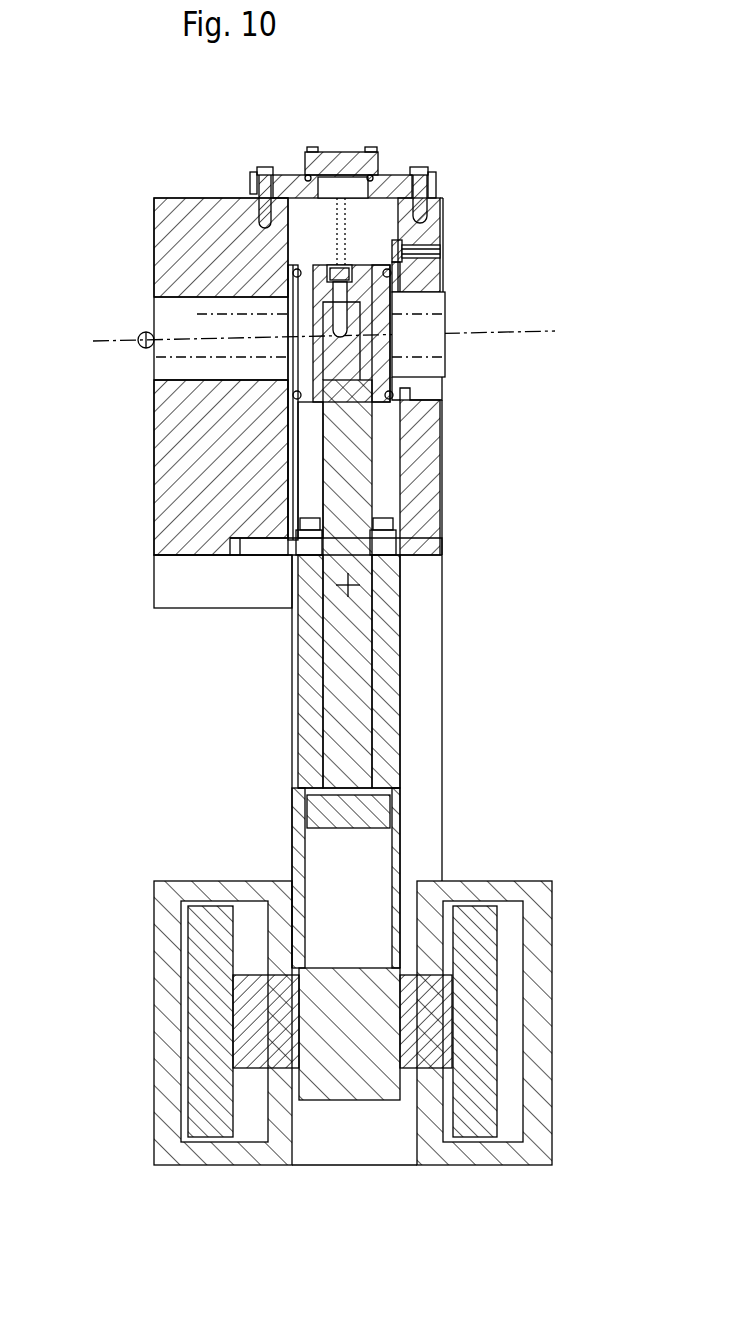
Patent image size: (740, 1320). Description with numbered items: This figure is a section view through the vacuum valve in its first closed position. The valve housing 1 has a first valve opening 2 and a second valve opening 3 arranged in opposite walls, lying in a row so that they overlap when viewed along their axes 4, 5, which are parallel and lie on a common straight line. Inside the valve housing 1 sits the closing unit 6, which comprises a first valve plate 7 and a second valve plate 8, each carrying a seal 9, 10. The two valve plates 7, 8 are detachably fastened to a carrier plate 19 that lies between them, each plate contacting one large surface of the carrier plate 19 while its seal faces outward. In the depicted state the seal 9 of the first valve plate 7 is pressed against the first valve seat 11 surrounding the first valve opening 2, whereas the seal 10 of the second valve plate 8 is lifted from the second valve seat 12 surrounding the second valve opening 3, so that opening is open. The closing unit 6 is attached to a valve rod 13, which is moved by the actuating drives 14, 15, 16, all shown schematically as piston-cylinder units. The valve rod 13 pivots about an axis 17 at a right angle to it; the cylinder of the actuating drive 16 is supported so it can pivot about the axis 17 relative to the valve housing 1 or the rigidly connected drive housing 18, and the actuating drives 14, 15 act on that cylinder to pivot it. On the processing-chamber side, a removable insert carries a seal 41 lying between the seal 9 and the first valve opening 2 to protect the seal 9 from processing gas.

The valve housing 1 is at (187, 230).
The first valve opening 2 is at (415, 347).
The second valve opening 3 is at (258, 347).
The axis of the first valve opening 4 is at (477, 332).
The axis of the second valve opening 5 is at (190, 339).
The closing unit 6 is at (296, 408).
The first valve plate 7 is at (380, 322).
The second valve plate 8 is at (303, 333).
The seal of the first valve plate 9 is at (393, 396).
The seal of the second valve plate 10 is at (290, 397).
The first valve seat 11 is at (382, 287).
The second valve seat 12 is at (300, 285).
The valve rod 13 is at (358, 468).
The actuating drive 14 is at (140, 1128).
The actuating drive 15 is at (562, 1128).
The actuating drive 16 is at (413, 825).
The axis 17 is at (352, 585).
The drive housing 18 is at (425, 680).
The carrier plate 19 is at (325, 266).
The seal 41 is at (400, 383).